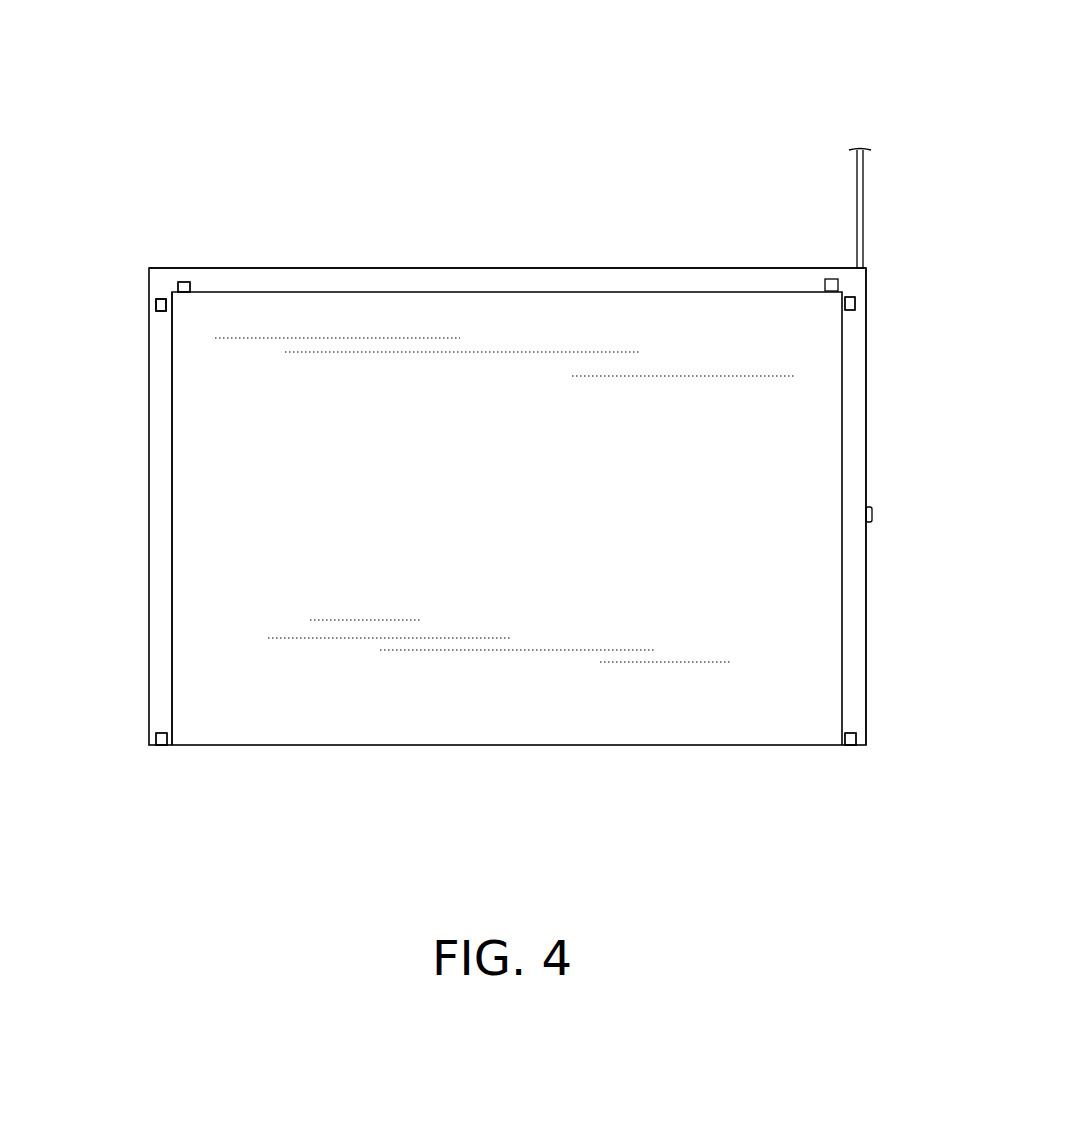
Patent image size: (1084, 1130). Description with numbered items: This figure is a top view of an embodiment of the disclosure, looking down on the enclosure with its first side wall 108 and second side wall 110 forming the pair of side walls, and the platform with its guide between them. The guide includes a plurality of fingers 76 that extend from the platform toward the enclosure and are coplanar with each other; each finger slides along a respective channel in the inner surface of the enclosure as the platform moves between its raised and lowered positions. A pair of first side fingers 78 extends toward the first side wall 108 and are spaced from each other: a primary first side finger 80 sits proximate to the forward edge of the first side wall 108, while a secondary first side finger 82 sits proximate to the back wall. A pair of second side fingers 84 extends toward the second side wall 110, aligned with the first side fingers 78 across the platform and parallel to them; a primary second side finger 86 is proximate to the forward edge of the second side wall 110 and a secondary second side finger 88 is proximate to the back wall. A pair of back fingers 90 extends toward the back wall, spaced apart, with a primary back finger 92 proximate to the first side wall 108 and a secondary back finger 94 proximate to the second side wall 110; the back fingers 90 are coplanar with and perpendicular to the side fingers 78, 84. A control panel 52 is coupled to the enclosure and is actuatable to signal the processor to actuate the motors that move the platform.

The control panel 52 is at (930, 515).
The plurality of fingers 76 is at (163, 258).
The pair of first side fingers 78 is at (137, 332).
The primary first side finger 80 is at (167, 745).
The secondary first side finger 82 is at (163, 312).
The pair of second side fingers 84 is at (893, 739).
The primary second side finger 86 is at (848, 745).
The secondary second side finger 88 is at (850, 312).
The pair of back fingers 90 is at (275, 285).
The primary back finger 92 is at (192, 284).
The secondary back finger 94 is at (825, 287).
The first side wall 108 is at (165, 568).
The second side wall 110 is at (864, 412).